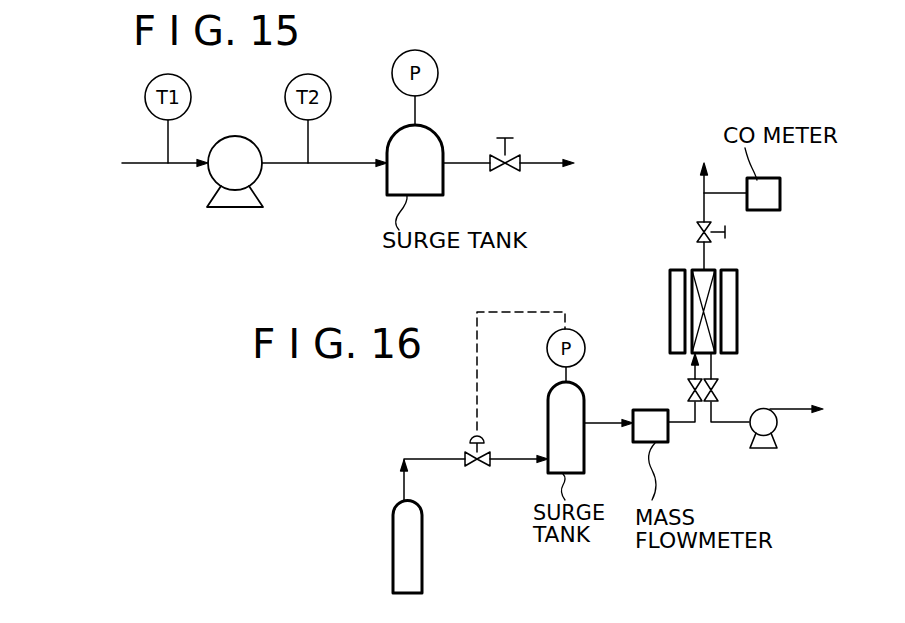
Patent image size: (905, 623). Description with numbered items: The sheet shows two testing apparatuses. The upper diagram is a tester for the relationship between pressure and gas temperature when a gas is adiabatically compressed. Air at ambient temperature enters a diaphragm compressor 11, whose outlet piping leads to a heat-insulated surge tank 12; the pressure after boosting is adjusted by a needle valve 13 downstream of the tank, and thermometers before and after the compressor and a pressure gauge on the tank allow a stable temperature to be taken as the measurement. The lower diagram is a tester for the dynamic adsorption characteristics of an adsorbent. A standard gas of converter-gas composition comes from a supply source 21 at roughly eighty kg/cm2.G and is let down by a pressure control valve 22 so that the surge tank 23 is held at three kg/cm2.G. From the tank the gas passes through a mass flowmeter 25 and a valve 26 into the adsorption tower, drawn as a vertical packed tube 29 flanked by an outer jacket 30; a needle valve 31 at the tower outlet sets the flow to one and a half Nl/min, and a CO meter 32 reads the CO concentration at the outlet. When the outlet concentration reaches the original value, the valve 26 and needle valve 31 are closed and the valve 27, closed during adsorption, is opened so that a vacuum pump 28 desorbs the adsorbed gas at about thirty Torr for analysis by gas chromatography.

In FIG. 15, the diaphragm compressor 11 is at (216, 182).
In FIG. 15, the surge tank 12 is at (387, 178).
In FIG. 15, the needle valve 13 is at (507, 172).
In FIG. 16, the supply source 21 is at (422, 577).
In FIG. 16, the pressure control valve 22 is at (480, 467).
In FIG. 16, the surge tank 23 is at (548, 432).
In FIG. 16, the mass flowmeter 25 is at (633, 415).
In FIG. 16, the valve 26 is at (688, 390).
In FIG. 16, the valve 27 is at (718, 392).
In FIG. 16, the vacuum pump 28 is at (767, 448).
In FIG. 16, the reactor tube 29 is at (707, 270).
In FIG. 16, the heater 30 is at (737, 300).
In FIG. 16, the needle valve 31 is at (697, 232).
In FIG. 16, the CO meter 32 is at (780, 197).